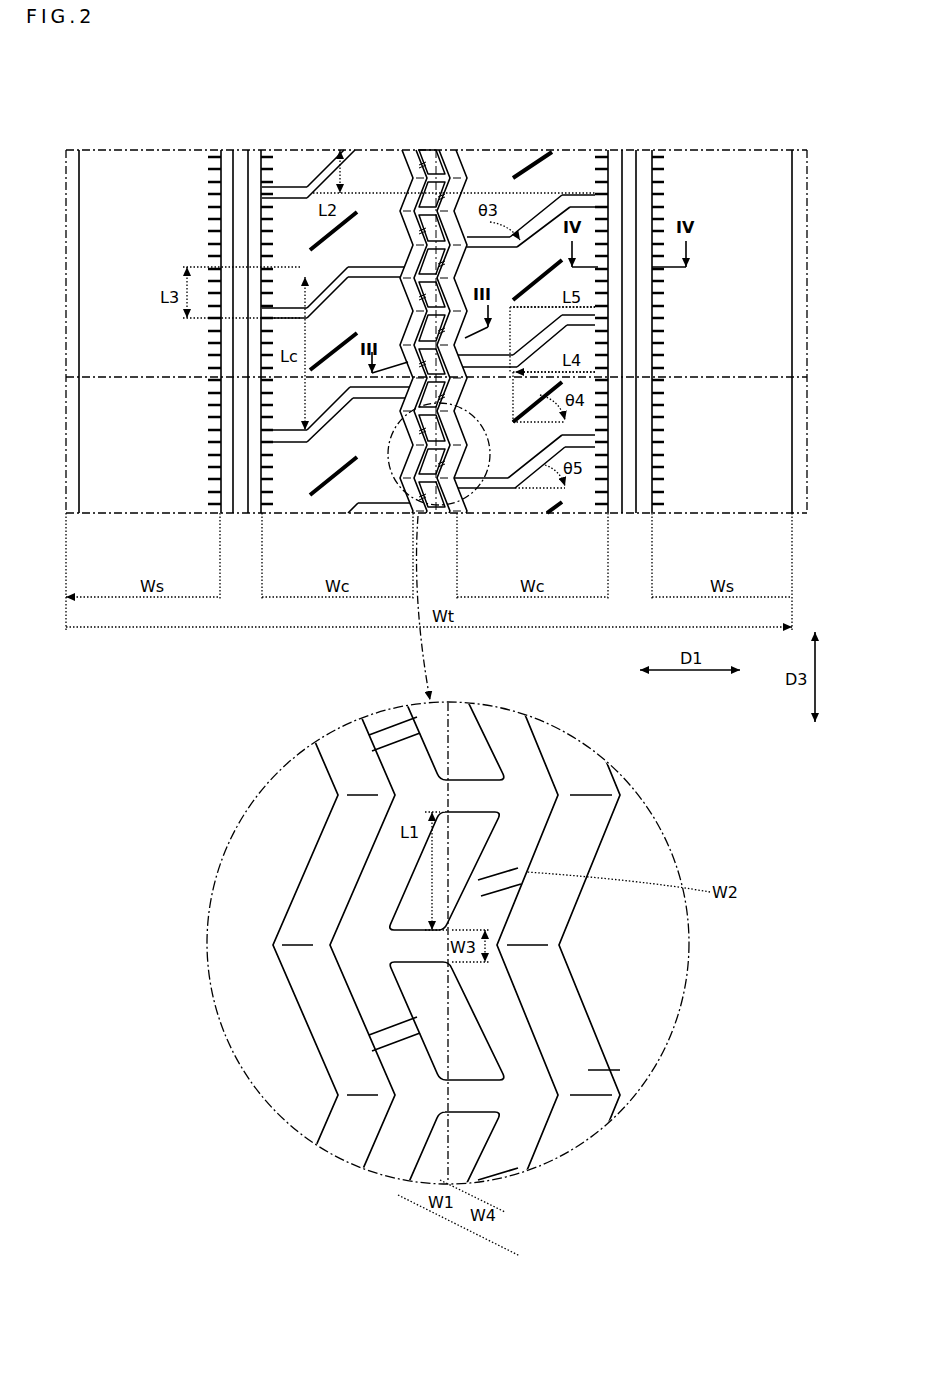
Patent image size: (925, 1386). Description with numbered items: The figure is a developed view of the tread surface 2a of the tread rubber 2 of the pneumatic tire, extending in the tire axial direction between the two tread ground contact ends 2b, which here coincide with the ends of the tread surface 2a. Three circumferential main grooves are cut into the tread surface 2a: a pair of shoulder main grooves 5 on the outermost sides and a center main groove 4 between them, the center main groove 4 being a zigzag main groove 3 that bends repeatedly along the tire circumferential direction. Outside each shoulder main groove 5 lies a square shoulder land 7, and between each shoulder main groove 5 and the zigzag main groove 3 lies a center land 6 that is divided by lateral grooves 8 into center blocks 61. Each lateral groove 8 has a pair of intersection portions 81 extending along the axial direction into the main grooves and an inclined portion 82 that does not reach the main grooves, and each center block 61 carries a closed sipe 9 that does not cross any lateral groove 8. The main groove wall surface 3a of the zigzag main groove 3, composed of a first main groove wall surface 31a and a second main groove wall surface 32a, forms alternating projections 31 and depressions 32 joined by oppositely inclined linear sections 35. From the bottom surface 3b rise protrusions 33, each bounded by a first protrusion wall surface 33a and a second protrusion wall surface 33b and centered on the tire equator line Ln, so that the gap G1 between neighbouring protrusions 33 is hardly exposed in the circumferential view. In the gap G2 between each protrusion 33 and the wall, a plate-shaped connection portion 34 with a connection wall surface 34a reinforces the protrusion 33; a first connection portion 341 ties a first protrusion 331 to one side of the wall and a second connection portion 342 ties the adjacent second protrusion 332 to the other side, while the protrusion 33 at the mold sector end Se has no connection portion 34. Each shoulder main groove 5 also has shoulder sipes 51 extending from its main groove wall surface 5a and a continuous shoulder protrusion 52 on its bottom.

The tread rubber 2 is at (443, 292).
The tread surface 2a is at (752, 148).
The tread ground contact end 2b is at (68, 148).
The zigzag main groove 3 is at (411, 289).
The center main groove 4 is at (404, 148).
The main groove wall surface 3a is at (448, 942).
The bottom surface 3b is at (446, 942).
The shoulder main groove 5 is at (455, 292).
The main groove wall surface 5a is at (642, 154).
The shoulder sipe 51 is at (660, 156).
The shoulder protrusion 52 is at (237, 148).
The center land 6 is at (439, 315).
The center block 61 is at (385, 245).
The shoulder land 7 is at (135, 148).
The lateral groove 8 is at (442, 320).
The intersection portion 81 is at (290, 444).
The inclined portion 82 is at (318, 437).
The sipe 9 is at (333, 475).
The projection 31 is at (350, 790).
The first main groove wall surface 31a is at (395, 875).
The depression 32 is at (578, 790).
The second main groove wall surface 32a is at (330, 860).
The protrusion 33 is at (446, 947).
The first protrusion wall surface 33a is at (400, 905).
The second protrusion wall surface 33b is at (395, 1000).
The first protrusion 331 is at (480, 770).
The second protrusion 332 is at (398, 732).
The connection portion 34 is at (434, 956).
The connection wall surface 34a is at (520, 890).
The first connection portion 341 is at (500, 862).
The second connection portion 342 is at (385, 1036).
The linear section 35 is at (600, 1012).
The gap G1 is at (448, 740).
The gap G2 is at (300, 1042).
The tire equator line Ln is at (438, 148).
The sector end Se is at (807, 375).